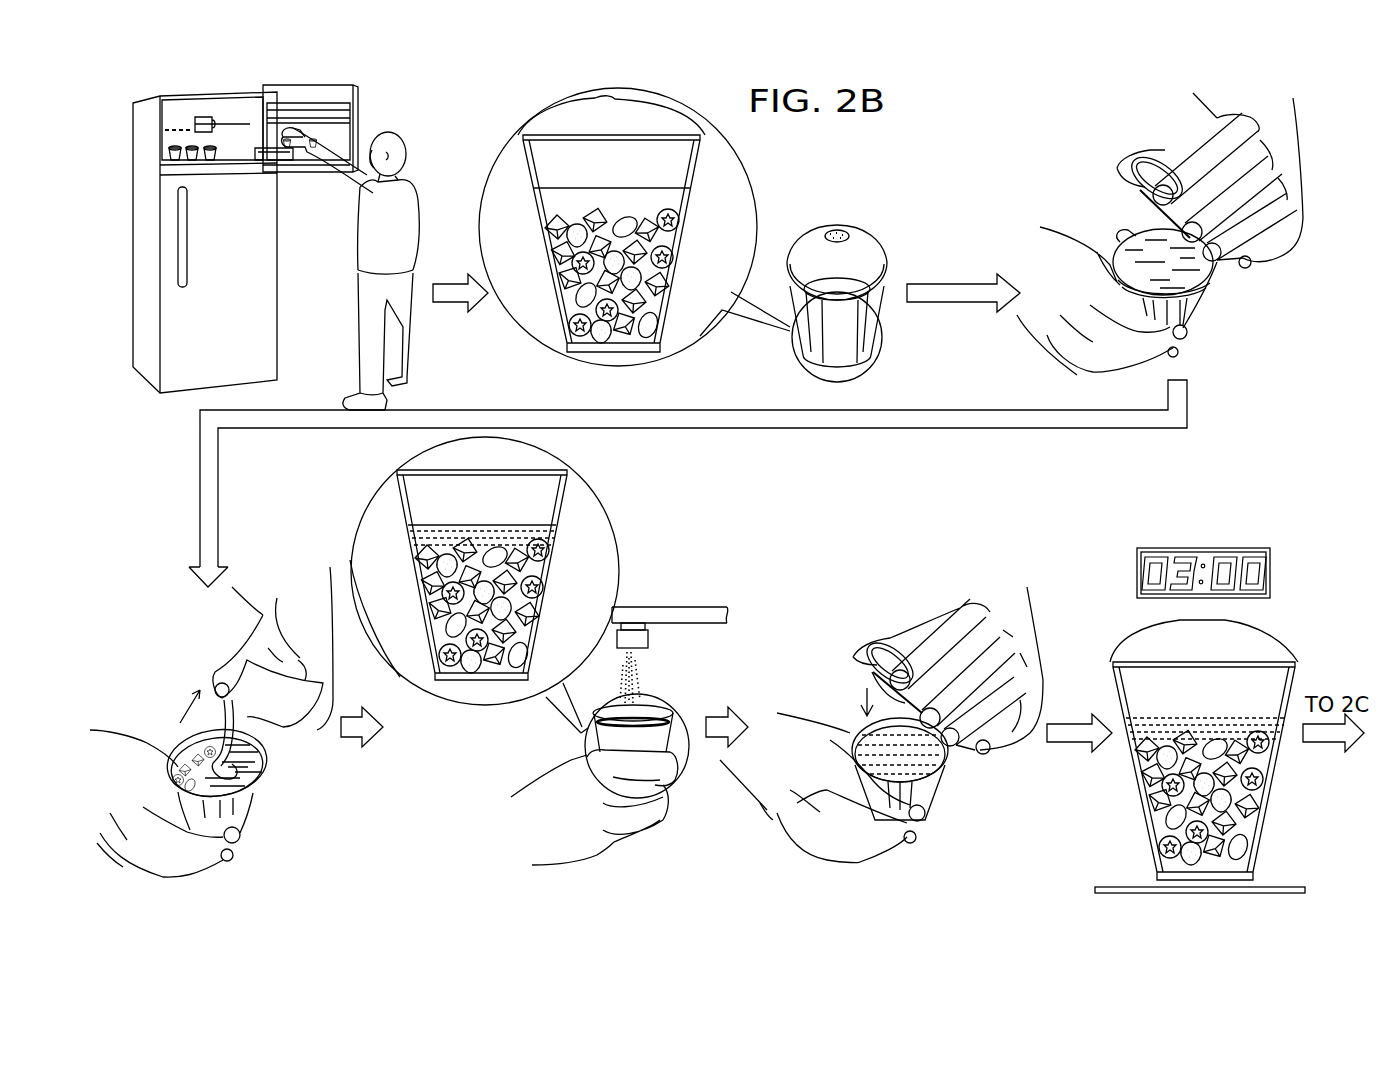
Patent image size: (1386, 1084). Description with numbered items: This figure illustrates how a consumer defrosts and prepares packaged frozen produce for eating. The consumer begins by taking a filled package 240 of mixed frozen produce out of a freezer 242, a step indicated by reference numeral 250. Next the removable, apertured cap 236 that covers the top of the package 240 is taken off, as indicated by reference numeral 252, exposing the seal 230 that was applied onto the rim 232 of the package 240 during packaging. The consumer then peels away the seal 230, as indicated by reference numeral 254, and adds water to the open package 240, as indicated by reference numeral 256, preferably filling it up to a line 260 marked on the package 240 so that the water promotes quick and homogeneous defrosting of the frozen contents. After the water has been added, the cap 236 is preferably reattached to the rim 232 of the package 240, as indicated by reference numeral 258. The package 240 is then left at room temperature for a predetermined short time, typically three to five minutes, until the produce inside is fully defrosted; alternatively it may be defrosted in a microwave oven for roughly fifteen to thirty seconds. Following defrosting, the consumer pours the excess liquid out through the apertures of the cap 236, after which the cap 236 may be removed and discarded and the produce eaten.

The seal 230 is at (1190, 283).
The rim 232 is at (873, 690).
The removable, apertured cap 236 is at (548, 104).
The filled package 240 is at (197, 160).
The freezer 242 is at (232, 118).
The removal of the filled package from the freezer 250 is at (292, 173).
The removal of the cap 252 is at (1128, 230).
The removal of the seal 254 is at (180, 713).
The addition of water 256 is at (656, 668).
The reattachment of the cap 258 is at (867, 688).
The line 260 is at (600, 188).